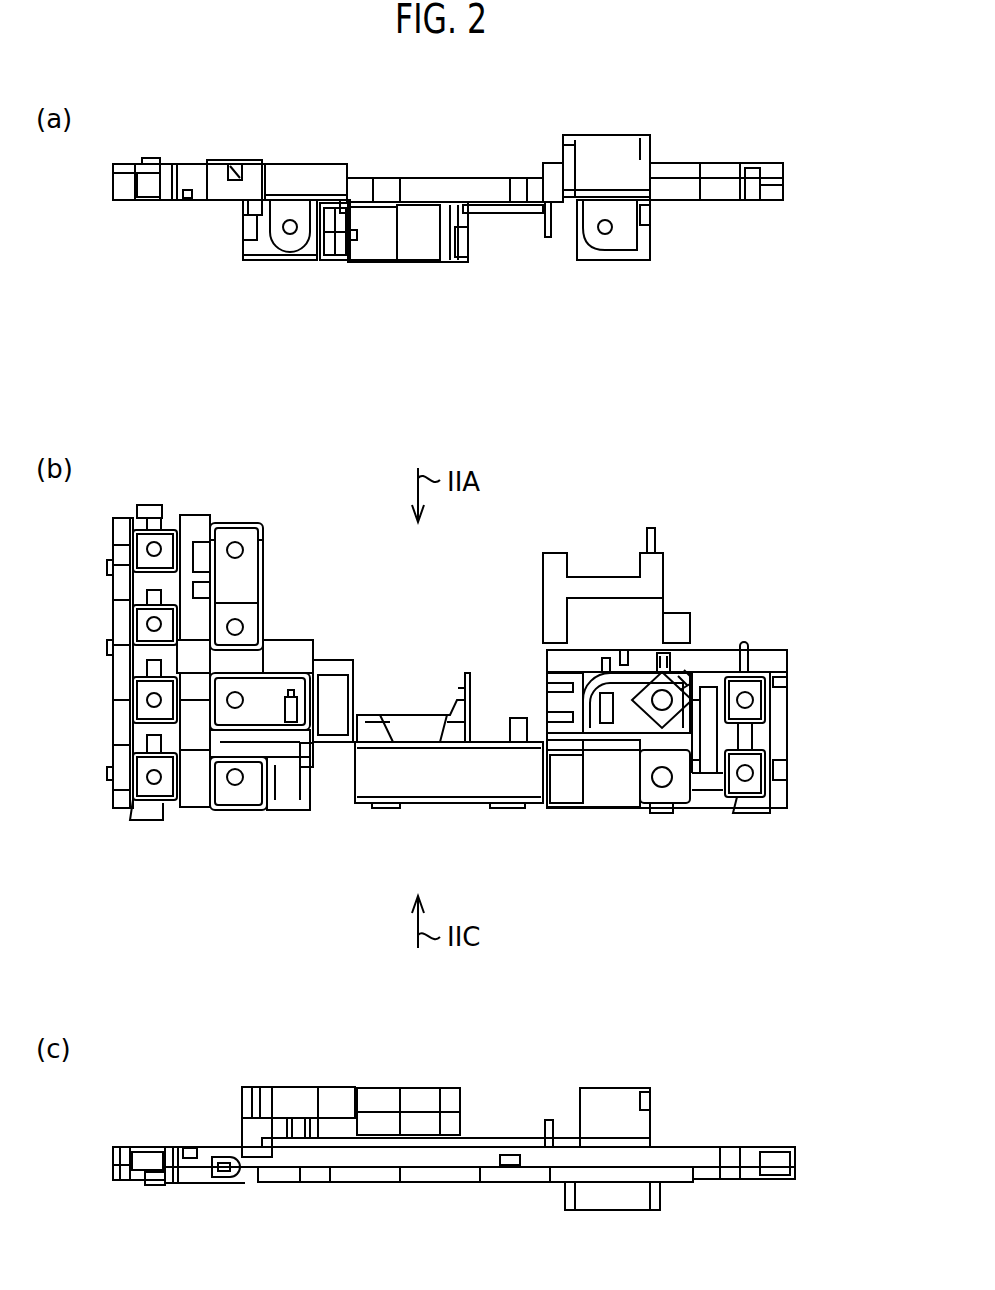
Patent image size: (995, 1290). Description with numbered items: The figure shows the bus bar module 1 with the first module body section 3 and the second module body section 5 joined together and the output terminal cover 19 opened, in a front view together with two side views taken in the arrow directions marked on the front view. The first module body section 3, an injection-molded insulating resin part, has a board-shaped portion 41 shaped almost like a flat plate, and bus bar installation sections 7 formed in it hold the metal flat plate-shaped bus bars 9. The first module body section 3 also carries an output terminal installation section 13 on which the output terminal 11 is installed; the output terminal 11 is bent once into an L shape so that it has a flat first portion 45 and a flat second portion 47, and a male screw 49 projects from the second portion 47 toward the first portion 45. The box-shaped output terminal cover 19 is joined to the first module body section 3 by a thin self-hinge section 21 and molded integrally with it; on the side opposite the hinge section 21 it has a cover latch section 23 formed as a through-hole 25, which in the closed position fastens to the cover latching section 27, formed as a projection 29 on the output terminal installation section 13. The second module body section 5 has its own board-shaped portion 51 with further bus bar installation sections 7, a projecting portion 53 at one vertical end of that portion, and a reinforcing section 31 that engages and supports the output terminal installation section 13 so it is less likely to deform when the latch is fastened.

The bus bar module 1 is at (334, 836).
The first module body section 3 is at (228, 522).
The second module body section 5 is at (762, 647).
The bus bar installation section 7 is at (162, 639).
The bus bar 9 is at (165, 617).
The output terminal 11 is at (290, 240).
The output terminal installation section 13 is at (262, 255).
The output terminal cover 19 is at (407, 717).
The hinge section 21 is at (357, 713).
The cover latch section 23 is at (498, 671).
The through-hole 25 is at (470, 675).
The cover latching section 27 is at (180, 237).
The projection 29 is at (240, 245).
The reinforcing section 31 is at (255, 1140).
The board-shaped portion 41 is at (150, 660).
The first portion 45 is at (268, 690).
The second portion 47 is at (300, 238).
The male screw 49 is at (292, 221).
The board-shaped portion 51 is at (770, 742).
The projecting portion 53 is at (392, 806).